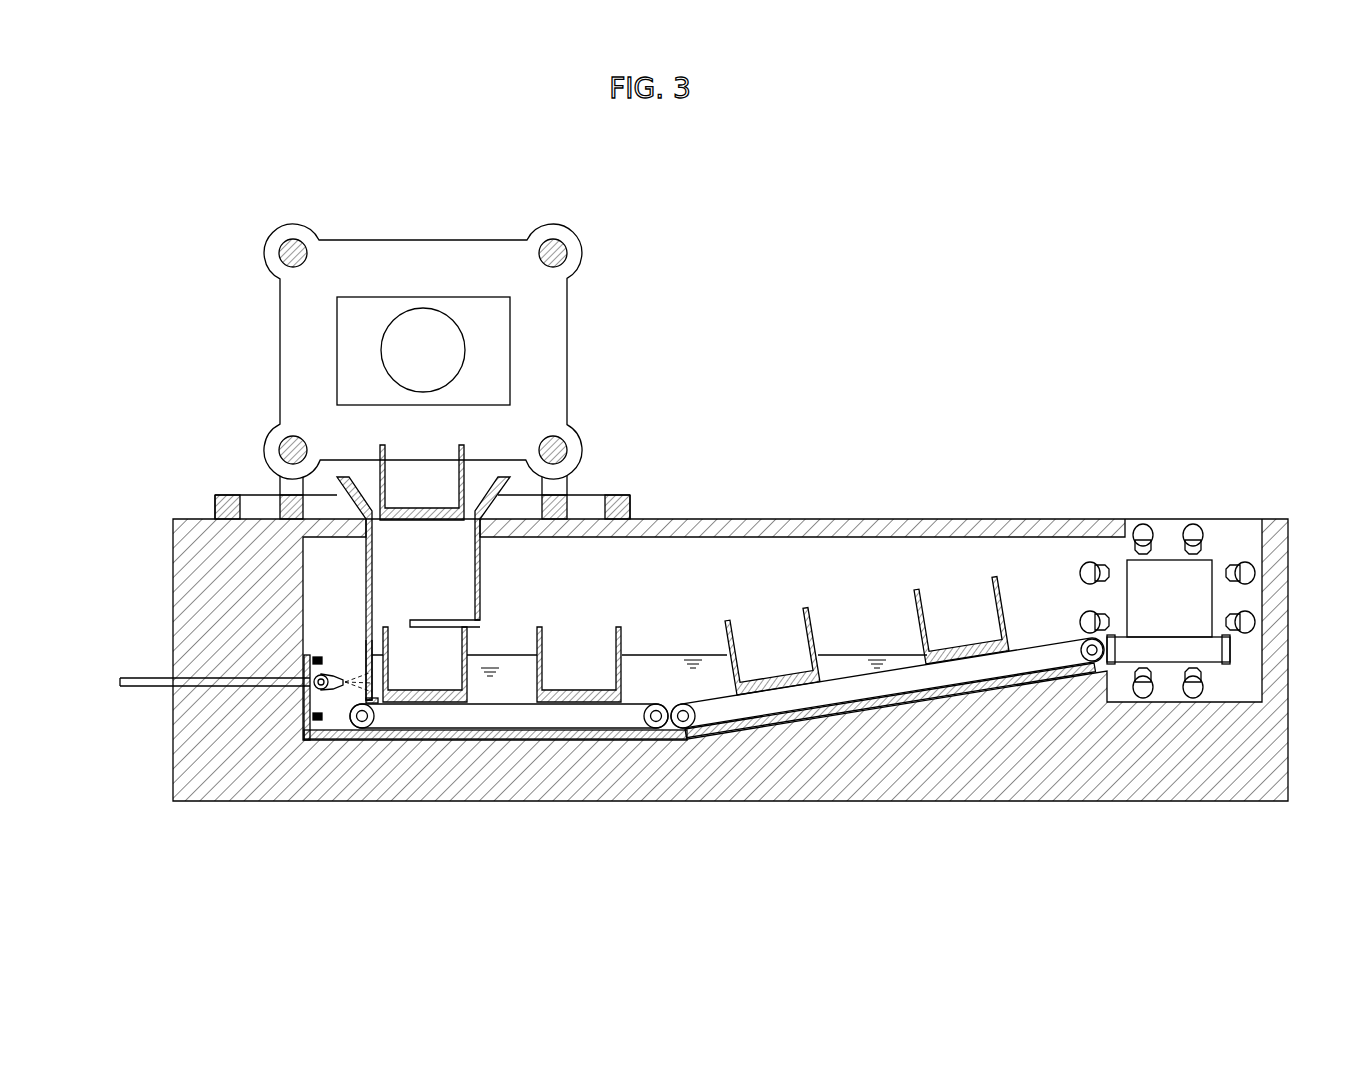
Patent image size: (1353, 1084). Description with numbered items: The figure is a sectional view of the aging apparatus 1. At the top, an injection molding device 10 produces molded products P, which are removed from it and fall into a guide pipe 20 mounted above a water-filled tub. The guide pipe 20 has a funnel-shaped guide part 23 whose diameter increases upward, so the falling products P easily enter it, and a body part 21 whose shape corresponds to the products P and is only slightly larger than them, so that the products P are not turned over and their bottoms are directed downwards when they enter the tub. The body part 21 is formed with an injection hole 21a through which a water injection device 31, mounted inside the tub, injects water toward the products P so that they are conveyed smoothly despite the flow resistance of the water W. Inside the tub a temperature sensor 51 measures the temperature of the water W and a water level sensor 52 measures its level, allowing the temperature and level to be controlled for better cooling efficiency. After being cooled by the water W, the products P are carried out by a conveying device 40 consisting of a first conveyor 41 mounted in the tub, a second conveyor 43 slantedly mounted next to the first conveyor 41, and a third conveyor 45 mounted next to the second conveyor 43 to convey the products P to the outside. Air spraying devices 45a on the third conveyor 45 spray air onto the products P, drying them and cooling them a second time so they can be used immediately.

The aging apparatus 1 is at (655, 188).
The injection molding device 10 is at (620, 342).
The guide pipe 20 is at (494, 563).
The body part 21 is at (481, 594).
The injection hole 21a is at (353, 672).
The guide part 23 is at (493, 503).
The water injection device 31 is at (337, 688).
The conveying device 40 is at (905, 861).
The first conveyor 41 is at (636, 731).
The second conveyor 43 is at (838, 708).
The third conveyor 45 is at (1127, 655).
The air spraying devices 45a is at (1193, 530).
The temperature sensor 51 is at (303, 731).
The water level sensor 52 is at (306, 655).
The molded products P is at (633, 636).
The water W is at (673, 670).